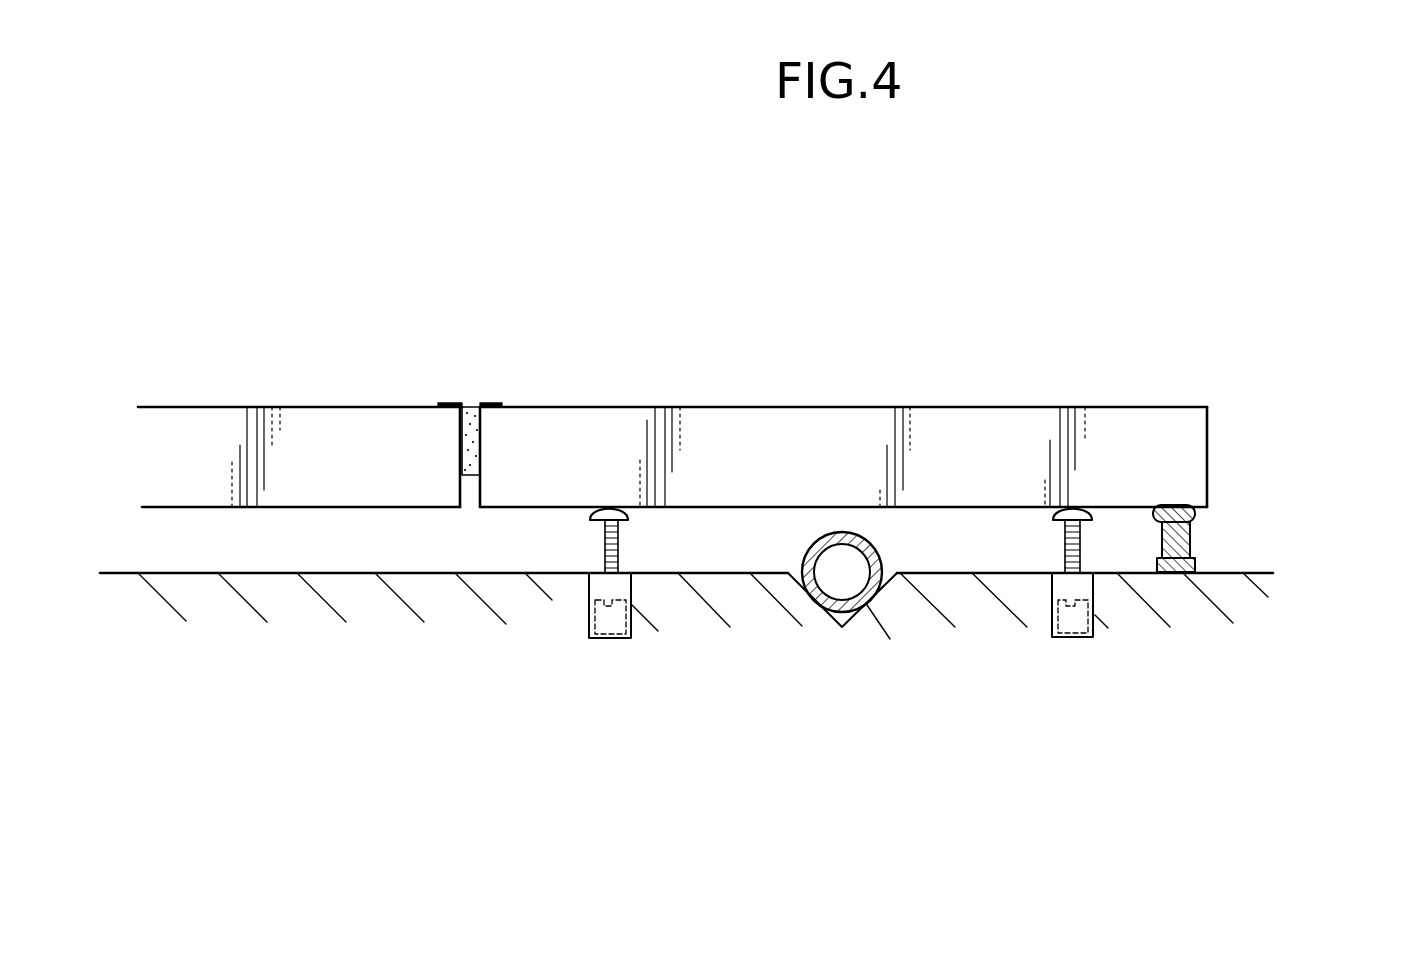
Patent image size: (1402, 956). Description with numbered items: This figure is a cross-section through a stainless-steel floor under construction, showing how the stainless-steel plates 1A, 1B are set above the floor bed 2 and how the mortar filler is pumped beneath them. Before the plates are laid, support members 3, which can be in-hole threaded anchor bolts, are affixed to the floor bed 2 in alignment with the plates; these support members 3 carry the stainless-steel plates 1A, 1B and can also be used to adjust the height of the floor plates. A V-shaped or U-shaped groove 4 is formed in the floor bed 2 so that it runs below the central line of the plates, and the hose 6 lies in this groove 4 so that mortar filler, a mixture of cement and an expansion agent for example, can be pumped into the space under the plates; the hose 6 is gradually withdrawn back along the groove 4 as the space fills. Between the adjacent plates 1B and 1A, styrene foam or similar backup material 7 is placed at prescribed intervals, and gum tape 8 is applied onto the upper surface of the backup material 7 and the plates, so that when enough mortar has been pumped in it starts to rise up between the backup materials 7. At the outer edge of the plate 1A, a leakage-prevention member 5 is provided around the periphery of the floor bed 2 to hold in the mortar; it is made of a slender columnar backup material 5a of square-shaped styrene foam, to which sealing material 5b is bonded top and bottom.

The stainless-steel plate 1A is at (947, 440).
The stainless-steel plate 1B is at (213, 428).
The floor bed 2 is at (310, 653).
The support member 3 is at (598, 517).
The groove 4 is at (832, 618).
The leakage-prevention member 5 is at (1256, 501).
The backup material 5a is at (1185, 536).
The sealing material 5b is at (1183, 506).
The hose 6 is at (825, 540).
The backup material 7 is at (460, 452).
The gum tape 8 is at (488, 405).